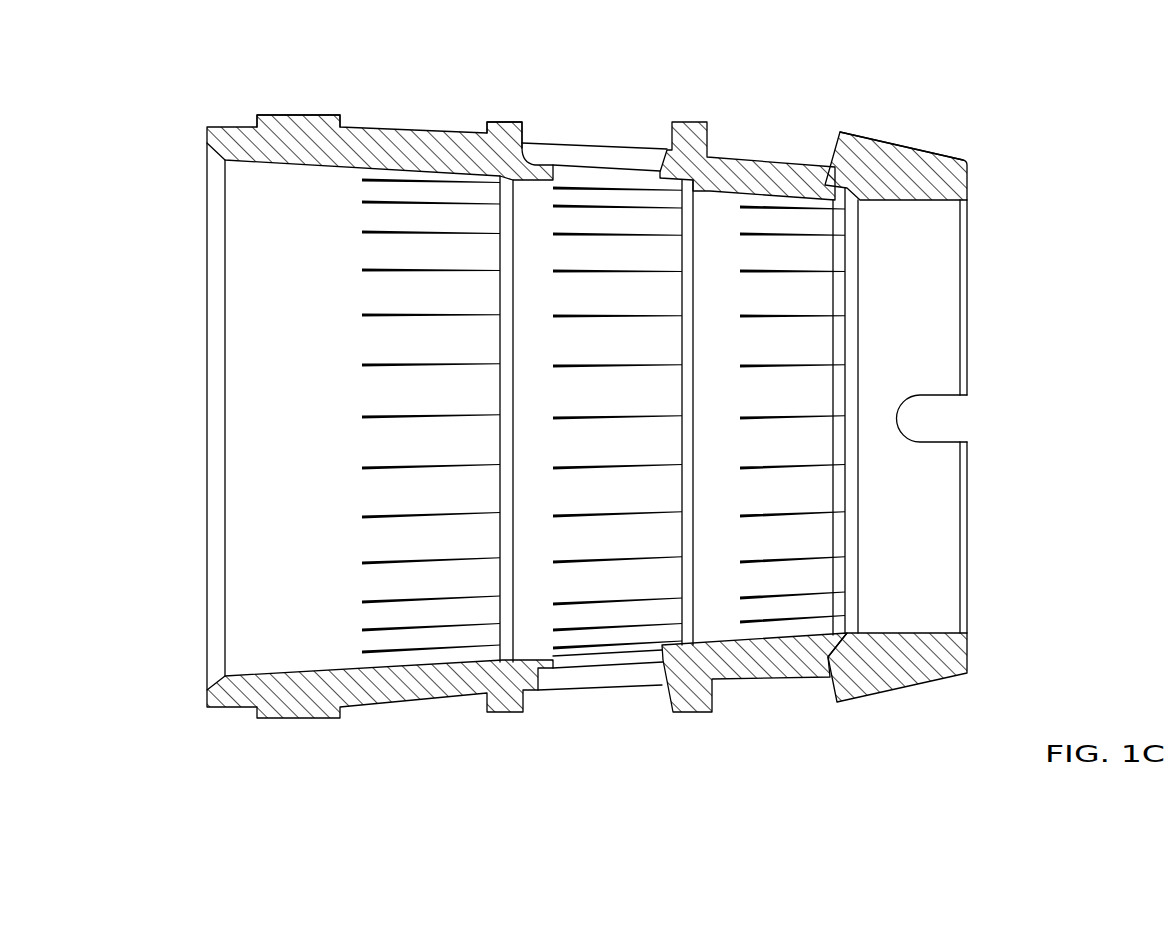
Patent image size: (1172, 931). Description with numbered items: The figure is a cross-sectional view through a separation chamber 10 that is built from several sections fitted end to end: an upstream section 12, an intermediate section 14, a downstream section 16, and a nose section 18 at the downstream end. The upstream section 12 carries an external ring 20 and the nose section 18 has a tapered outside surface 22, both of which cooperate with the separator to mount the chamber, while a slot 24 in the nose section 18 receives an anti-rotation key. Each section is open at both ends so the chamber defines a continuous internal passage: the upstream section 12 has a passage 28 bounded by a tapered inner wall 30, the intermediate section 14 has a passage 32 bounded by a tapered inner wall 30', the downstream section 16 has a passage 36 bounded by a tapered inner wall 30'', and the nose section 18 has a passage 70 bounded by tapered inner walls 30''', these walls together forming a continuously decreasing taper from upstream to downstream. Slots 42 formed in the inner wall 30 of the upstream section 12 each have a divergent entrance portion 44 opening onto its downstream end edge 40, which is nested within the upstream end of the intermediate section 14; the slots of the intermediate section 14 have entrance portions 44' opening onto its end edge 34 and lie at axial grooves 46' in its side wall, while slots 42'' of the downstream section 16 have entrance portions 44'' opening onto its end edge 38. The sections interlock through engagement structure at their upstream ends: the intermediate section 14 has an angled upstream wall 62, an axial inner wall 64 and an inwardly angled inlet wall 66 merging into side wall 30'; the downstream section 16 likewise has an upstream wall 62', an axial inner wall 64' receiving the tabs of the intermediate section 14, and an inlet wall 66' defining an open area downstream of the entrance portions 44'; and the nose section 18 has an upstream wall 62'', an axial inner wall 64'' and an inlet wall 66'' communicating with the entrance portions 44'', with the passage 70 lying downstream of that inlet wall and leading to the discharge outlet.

The separation chamber 10 is at (587, 84).
The upstream section 12 is at (232, 121).
The intermediate section 14 is at (505, 117).
The downstream section 16 is at (694, 115).
The nose section 18 is at (851, 120).
The ring 20 is at (304, 116).
The tapered outside surface 22 is at (918, 142).
The slots 24 is at (928, 440).
The passage 28 is at (285, 403).
The tapered inner wall 30 is at (435, 669).
The tapered inner wall 30' is at (516, 678).
The tapered inner wall 30'' is at (754, 677).
The tapered inner wall 30''' is at (978, 661).
The passage 32 is at (583, 407).
The end edge 34 is at (683, 226).
The passage 36 is at (761, 407).
The end edge 38 is at (848, 290).
The downstream end edge 40 is at (503, 650).
The slots 42 is at (387, 416).
The slots 42'' is at (699, 418).
The divergent entrance portion 44 is at (532, 442).
The divergent entrance portion 44' is at (718, 491).
The divergent entrance portion 44'' is at (893, 333).
The axial groove 46' is at (549, 728).
The upstream wall 62 is at (460, 126).
The upstream wall 62' is at (648, 100).
The upstream wall 62'' is at (882, 693).
The axial inner wall 64 is at (404, 205).
The axial inner wall 64' is at (590, 219).
The axial inner wall 64'' is at (883, 622).
The inlet wall 66 is at (447, 221).
The inlet wall 66' is at (658, 682).
The inlet wall 66'' is at (893, 547).
The passage 70 is at (918, 495).